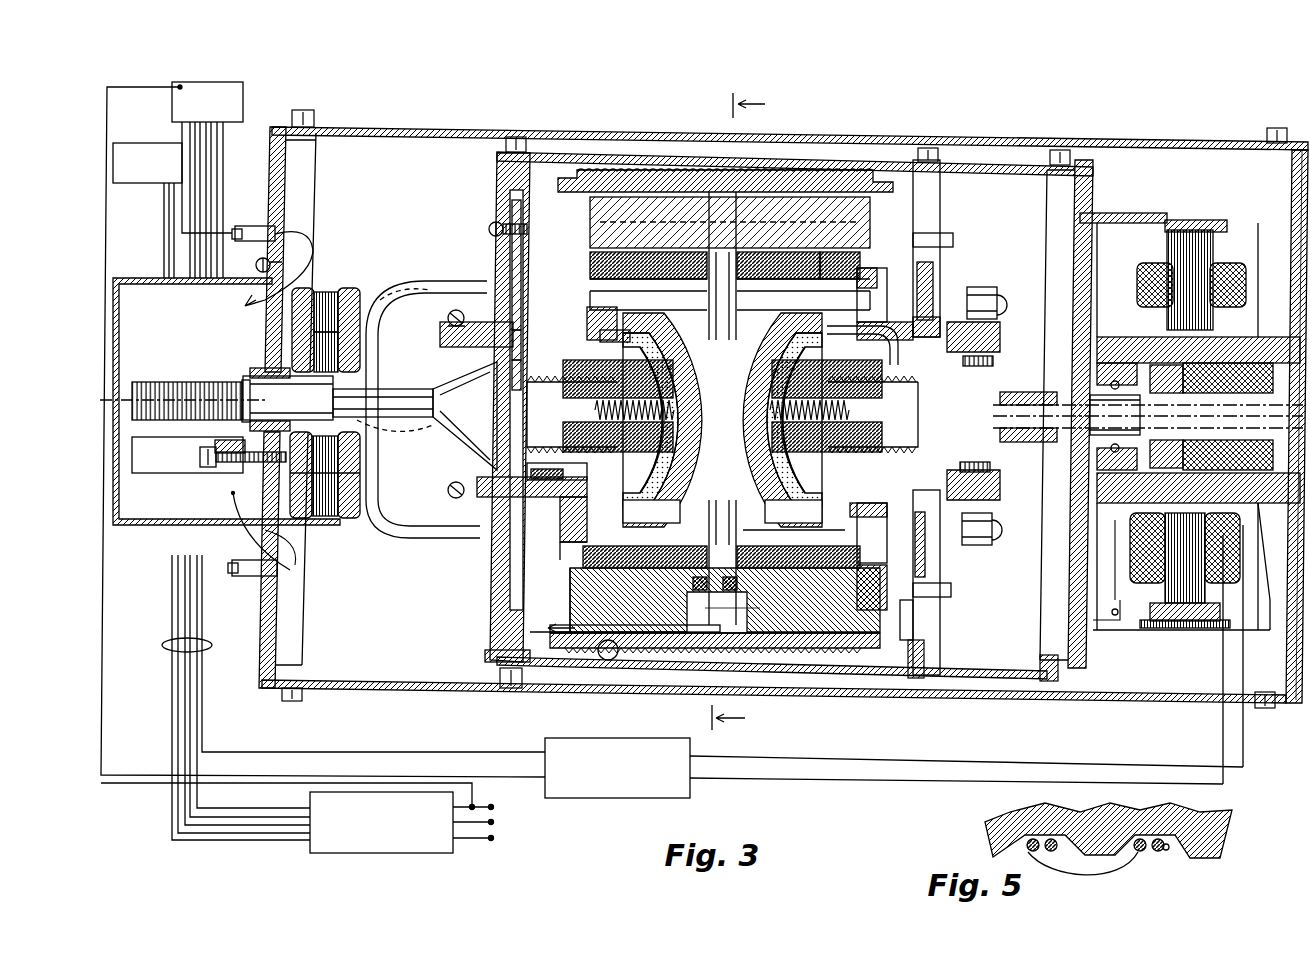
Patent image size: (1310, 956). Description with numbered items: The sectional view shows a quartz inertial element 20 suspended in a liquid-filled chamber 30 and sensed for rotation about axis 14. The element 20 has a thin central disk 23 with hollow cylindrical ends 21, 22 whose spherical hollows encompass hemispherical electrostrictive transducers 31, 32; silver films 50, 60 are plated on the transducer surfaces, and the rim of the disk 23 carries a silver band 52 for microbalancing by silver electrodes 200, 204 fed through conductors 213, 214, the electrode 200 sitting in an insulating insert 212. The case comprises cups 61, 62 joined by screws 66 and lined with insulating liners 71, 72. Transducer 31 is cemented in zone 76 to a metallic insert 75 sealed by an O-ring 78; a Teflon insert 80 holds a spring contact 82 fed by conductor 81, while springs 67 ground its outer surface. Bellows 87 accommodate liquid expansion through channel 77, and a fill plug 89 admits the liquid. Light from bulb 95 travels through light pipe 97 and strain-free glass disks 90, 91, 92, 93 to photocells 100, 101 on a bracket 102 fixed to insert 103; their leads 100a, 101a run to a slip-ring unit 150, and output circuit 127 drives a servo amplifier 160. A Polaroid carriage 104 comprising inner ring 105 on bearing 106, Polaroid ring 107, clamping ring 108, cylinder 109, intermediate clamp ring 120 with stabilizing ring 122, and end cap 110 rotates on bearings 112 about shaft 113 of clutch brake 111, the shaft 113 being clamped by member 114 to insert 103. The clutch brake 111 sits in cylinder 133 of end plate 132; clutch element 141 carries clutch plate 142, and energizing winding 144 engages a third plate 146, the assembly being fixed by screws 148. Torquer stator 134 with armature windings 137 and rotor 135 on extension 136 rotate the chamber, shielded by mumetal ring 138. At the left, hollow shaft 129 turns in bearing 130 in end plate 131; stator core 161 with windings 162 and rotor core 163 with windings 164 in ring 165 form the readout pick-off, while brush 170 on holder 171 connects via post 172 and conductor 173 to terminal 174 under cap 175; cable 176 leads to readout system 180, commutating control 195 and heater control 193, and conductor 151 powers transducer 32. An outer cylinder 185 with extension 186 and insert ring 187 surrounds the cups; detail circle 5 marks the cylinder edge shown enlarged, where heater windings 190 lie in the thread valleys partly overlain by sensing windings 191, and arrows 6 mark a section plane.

In FIG. 3, the section line 5 is at (600, 655).
In FIG. 3, the section line 6 is at (745, 411).
In FIG. 3, the axis 14 is at (142, 395).
In FIG. 3, the quartz inertial element 20 is at (709, 363).
In FIG. 3, the cylindrical end 21 is at (645, 526).
In FIG. 3, the cylindrical end 22 is at (780, 528).
In FIG. 3, the central disk 23 is at (728, 506).
In FIG. 3, the chamber 30 is at (700, 650).
In FIG. 3, the hemispherical electrostrictive ultrasonic transducer 31 is at (668, 352).
In FIG. 3, the hemispherical electrostrictive ultrasonic transducer 32 is at (772, 352).
In FIG. 3, the silver film 50 is at (665, 460).
In FIG. 3, the silver band 52 is at (743, 533).
In FIG. 3, the silver film 60 is at (657, 463).
In FIG. 3, the cup 61 is at (569, 570).
In FIG. 3, the cup 62 is at (880, 578).
In FIG. 3, the screws 66 is at (780, 617).
In FIG. 3, the springs 67 is at (612, 340).
In FIG. 3, the sound-absorbing insulating lining 71 is at (652, 280).
In FIG. 3, the sound-absorbing insulating lining 72 is at (780, 281).
In FIG. 3, the cup-like metallic insert 75 is at (562, 506).
In FIG. 3, the epoxy cement zone 76 is at (693, 453).
In FIG. 3, the channel 77 is at (600, 474).
In FIG. 3, the O-ring 78 is at (515, 472).
In FIG. 3, the insulating insert 80 is at (610, 428).
In FIG. 3, the conductor 81 is at (333, 402).
In FIG. 3, the spring contact 82 is at (598, 411).
In FIG. 3, the bellows 87 is at (608, 390).
In FIG. 3, the fill plug 89 is at (482, 395).
In FIG. 3, the glass disk 90 is at (566, 542).
In FIG. 3, the glass disk 91 is at (612, 280).
In FIG. 3, the glass disk 92 is at (880, 530).
In FIG. 3, the glass disk 93 is at (870, 300).
In FIG. 3, the bulb 95 is at (386, 466).
In FIG. 3, the light pipe 97 is at (428, 288).
In FIG. 3, the photocell 100 is at (968, 546).
In FIG. 3, the electrical lead 100a is at (996, 541).
In FIG. 3, the photocell 101 is at (968, 294).
In FIG. 3, the electrical lead 101a is at (1010, 310).
In FIG. 3, the bracket 102 is at (1000, 335).
In FIG. 3, the insert 103 is at (992, 463).
In FIG. 3, the Polaroid carriage 104 is at (474, 166).
In FIG. 3, the inner ring 105 is at (522, 284).
In FIG. 3, the bearing 106 is at (522, 300).
In FIG. 3, the two-piece Polaroid ring 107 is at (522, 268).
In FIG. 3, the outer clamping ring 108 is at (492, 228).
In FIG. 3, the cylinder 109 is at (600, 152).
In FIG. 3, the end cap 110 is at (1090, 186).
In FIG. 3, the clutch brake 111 is at (1215, 415).
In FIG. 3, the bearings 112 is at (1068, 416).
In FIG. 3, the shaft 113 is at (1055, 442).
In FIG. 3, the clamping member 114 is at (994, 360).
In FIG. 3, the intermediate clamp ring 120 is at (940, 200).
In FIG. 3, the stabilizing ring 122 is at (905, 330).
In FIG. 3, the output circuit 127 is at (347, 772).
In FIG. 3, the hollow shaft 129 is at (390, 482).
In FIG. 3, the bearing 130 is at (272, 370).
In FIG. 3, the left end plate 131 is at (267, 622).
In FIG. 3, the end plate 132 is at (1290, 222).
In FIG. 3, the cylinder 133 is at (1247, 330).
In FIG. 3, the stator 134 is at (1166, 590).
In FIG. 3, the rotor element 135 is at (1186, 624).
In FIG. 3, the extension 136 is at (1152, 630).
In FIG. 3, the armature windings 137 is at (1255, 565).
In FIG. 3, the mumetal ring 138 is at (1112, 626).
In FIG. 3, the clutch element 141 is at (1095, 378).
In FIG. 3, the clutch plate 142 is at (1160, 365).
In FIG. 3, the clutch winding 144 is at (1196, 551).
In FIG. 3, the third clutch plate 146 is at (1185, 364).
In FIG. 3, the screws 148 is at (1240, 545).
In FIG. 3, the slip-ring unit 150 is at (170, 380).
In FIG. 3, the conductor 151 is at (862, 412).
In FIG. 3, the servo amplifier 160 is at (615, 800).
In FIG. 3, the stator core 161 is at (305, 290).
In FIG. 3, the stator windings 162 is at (350, 296).
In FIG. 3, the rotor core 163 is at (345, 332).
In FIG. 3, the rotor windings 164 is at (345, 356).
In FIG. 3, the inwardly-depending ring 165 is at (330, 522).
In FIG. 3, the brush 170 is at (232, 440).
In FIG. 3, the brush holder 171 is at (152, 473).
In FIG. 3, the brush post 172 is at (230, 494).
In FIG. 3, the conductor 173 is at (292, 572).
In FIG. 3, the output terminal 174 is at (238, 564).
In FIG. 3, the cap 175 is at (152, 280).
In FIG. 3, the cable 176 is at (170, 648).
In FIG. 3, the readout system 180 is at (395, 853).
In FIG. 3, the outer metallic cylinder 185 is at (642, 652).
In FIG. 5, the outer metallic cylinder 185 is at (1210, 855).
In FIG. 3, the extension 186 is at (832, 650).
In FIG. 3, the cylindrical insert ring 187 is at (862, 608).
In FIG. 5, the heater windings 190 is at (1150, 853).
In FIG. 5, the heat-sensing windings 191 is at (1088, 864).
In FIG. 3, the heater temperature control unit 193 is at (147, 210).
In FIG. 3, the commutating control 195 is at (323, 444).
In FIG. 3, the silver electrode 200 is at (757, 566).
In FIG. 3, the silver electrode 204 is at (703, 279).
In FIG. 3, the insulating insert 212 is at (645, 554).
In FIG. 3, the electrical conductor 213 is at (626, 612).
In FIG. 3, the conductor 214 is at (562, 190).